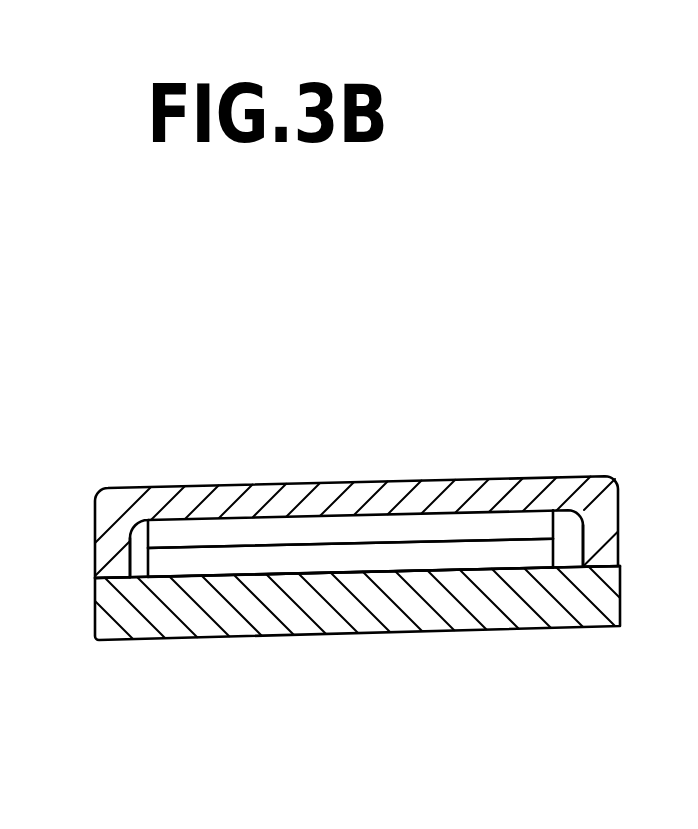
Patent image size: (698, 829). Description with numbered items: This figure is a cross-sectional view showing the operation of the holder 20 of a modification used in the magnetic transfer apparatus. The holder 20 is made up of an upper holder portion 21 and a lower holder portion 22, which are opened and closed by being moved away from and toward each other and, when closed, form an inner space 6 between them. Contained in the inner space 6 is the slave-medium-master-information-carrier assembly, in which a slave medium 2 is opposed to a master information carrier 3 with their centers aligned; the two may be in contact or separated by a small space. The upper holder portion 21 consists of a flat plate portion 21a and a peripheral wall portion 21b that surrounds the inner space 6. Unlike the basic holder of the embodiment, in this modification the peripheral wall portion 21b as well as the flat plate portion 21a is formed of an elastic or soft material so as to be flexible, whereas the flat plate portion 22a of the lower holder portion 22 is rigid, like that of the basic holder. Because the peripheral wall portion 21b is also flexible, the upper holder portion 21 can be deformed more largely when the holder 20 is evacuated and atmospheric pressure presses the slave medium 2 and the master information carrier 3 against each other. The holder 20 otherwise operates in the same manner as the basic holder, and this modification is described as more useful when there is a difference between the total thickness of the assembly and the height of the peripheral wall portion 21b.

The holder 20 is at (243, 408).
The upper holder portion 21 is at (488, 478).
The flat plate portion 21a is at (281, 500).
The peripheral wall portion 21b is at (105, 552).
The slave medium 2 is at (380, 528).
The master information carrier 3 is at (402, 552).
The inner space 6 is at (138, 542).
The lower holder portion 22 is at (493, 633).
The flat plate portion 22a is at (288, 613).